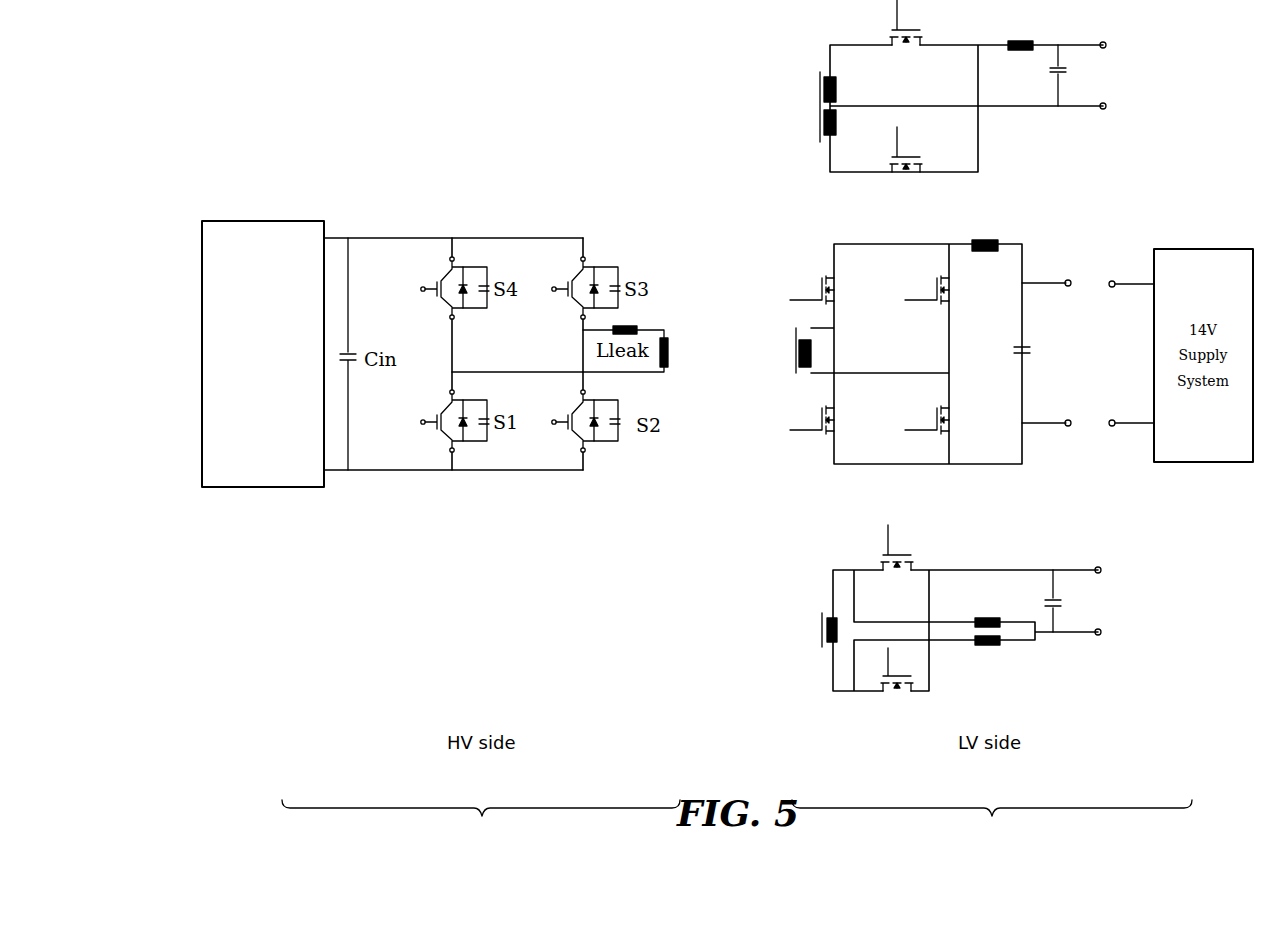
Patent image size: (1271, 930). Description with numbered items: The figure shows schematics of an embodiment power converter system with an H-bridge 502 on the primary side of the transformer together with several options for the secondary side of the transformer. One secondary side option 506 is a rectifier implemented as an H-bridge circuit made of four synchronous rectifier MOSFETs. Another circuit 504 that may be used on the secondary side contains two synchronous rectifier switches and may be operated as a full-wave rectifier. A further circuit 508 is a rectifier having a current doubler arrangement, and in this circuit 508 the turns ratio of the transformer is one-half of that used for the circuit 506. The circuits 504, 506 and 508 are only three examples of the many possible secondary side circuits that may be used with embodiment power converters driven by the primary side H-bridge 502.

The H-bridge 502 is at (271, 216).
The circuit 504 is at (801, 58).
The secondary side option 506 is at (798, 245).
The circuit 508 is at (798, 537).